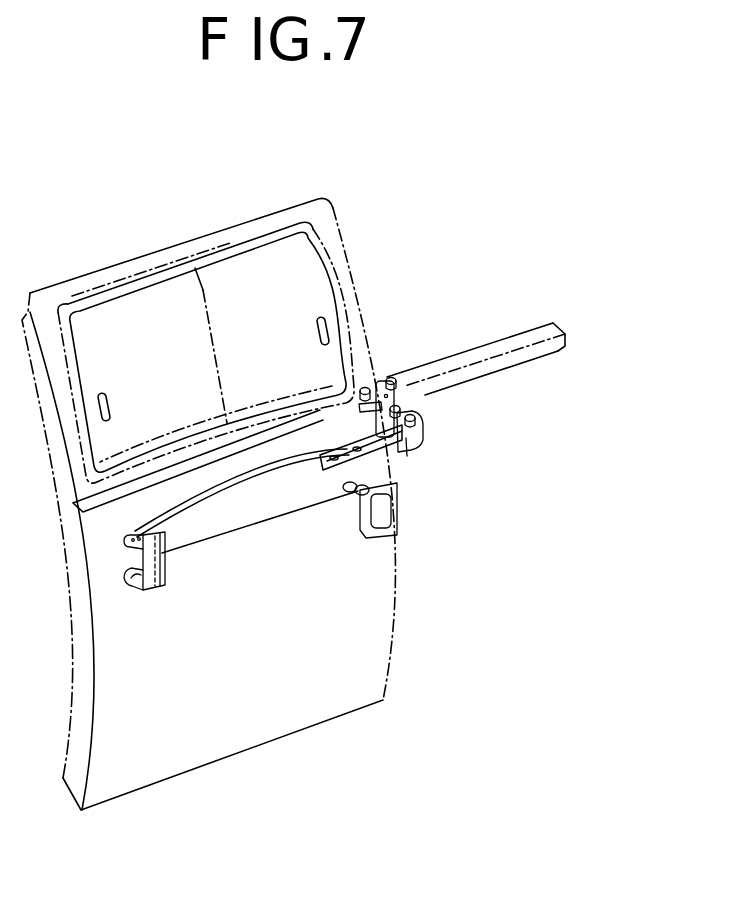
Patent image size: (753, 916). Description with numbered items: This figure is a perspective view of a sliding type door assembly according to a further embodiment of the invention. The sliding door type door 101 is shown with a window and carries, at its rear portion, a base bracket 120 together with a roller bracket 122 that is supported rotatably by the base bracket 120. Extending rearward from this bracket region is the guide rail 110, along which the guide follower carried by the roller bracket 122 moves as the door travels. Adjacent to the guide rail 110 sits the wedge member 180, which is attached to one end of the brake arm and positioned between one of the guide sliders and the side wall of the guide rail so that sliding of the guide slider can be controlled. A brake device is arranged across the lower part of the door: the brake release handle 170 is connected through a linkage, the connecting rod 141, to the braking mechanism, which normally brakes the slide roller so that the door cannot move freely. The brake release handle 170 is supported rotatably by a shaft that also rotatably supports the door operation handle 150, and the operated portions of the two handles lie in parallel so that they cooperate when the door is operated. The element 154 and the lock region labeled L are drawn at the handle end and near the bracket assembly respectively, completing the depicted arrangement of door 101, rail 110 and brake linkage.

The sliding door type door 101 is at (395, 634).
The guide rail 110 is at (497, 341).
The base bracket 120 is at (340, 482).
The roller bracket 122 is at (414, 438).
The connecting rod 141 is at (264, 478).
The door operation handle 150 is at (158, 594).
The lower rail member 154 is at (243, 532).
The brake release handle 170 is at (172, 568).
The wedge member 180 is at (384, 378).
The lock assembly L is at (399, 518).